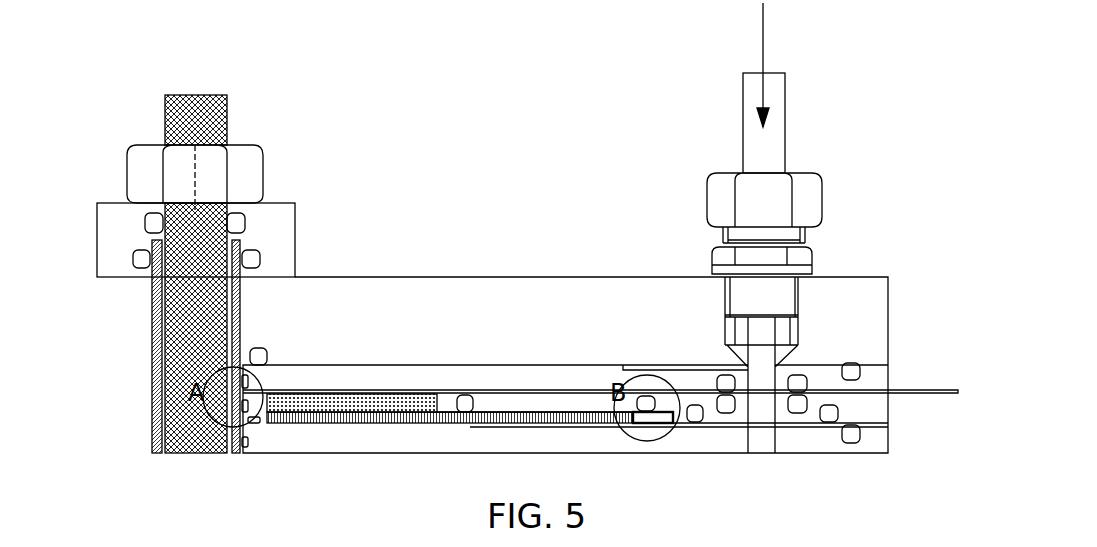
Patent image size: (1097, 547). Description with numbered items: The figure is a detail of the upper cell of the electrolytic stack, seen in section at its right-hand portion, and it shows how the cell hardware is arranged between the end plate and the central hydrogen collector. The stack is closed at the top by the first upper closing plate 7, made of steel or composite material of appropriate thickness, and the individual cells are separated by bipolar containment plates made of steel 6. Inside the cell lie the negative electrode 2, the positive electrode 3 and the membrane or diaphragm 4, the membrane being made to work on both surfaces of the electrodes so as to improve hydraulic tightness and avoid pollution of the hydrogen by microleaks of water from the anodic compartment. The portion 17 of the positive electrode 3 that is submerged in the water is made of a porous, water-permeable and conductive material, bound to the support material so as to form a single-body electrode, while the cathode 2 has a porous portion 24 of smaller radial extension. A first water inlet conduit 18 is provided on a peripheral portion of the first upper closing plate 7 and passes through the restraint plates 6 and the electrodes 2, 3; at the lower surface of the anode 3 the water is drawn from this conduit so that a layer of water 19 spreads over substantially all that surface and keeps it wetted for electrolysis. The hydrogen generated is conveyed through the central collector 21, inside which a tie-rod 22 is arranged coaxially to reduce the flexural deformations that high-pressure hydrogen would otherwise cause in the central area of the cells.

The negative electrode 2 is at (932, 362).
The positive electrode 3 is at (662, 417).
The membrane or diaphragm 4 is at (570, 410).
The bipolar containment plate 6 is at (825, 483).
The first upper closing plate 7 is at (353, 290).
The porous portion of the positive electrode 17 is at (413, 423).
The first water inlet conduit 18 is at (787, 125).
The layer of water 19 is at (735, 480).
The central collector 21 is at (162, 455).
The tie-rod 22 is at (183, 317).
The porous portion of the cathode 24 is at (355, 393).